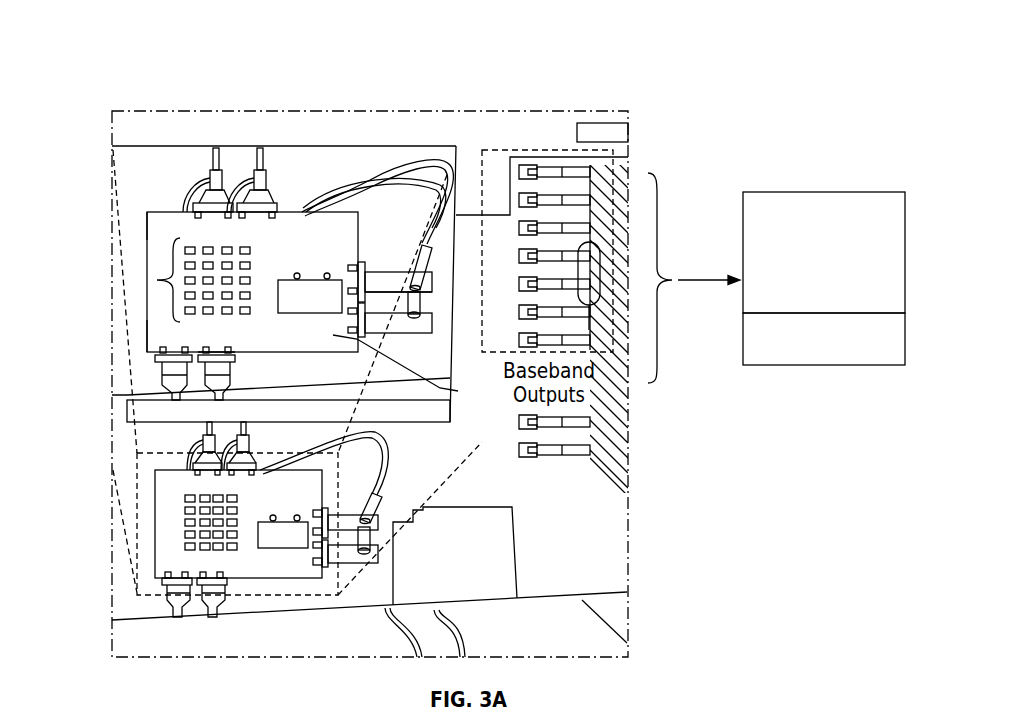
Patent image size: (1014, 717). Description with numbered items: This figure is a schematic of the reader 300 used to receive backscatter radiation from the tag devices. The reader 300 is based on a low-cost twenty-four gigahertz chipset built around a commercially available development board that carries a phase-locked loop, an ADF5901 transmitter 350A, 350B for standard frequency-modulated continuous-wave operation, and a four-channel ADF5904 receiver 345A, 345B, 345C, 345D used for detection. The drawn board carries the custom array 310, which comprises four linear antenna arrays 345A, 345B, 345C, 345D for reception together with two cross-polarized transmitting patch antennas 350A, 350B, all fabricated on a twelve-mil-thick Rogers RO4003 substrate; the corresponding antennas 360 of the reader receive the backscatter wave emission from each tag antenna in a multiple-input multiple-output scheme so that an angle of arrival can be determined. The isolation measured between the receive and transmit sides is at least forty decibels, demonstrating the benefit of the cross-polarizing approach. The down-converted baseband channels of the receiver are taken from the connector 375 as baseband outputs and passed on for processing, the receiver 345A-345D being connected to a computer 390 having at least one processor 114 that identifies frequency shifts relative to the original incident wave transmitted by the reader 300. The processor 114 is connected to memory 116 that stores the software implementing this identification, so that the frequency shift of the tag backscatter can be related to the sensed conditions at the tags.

The reader 300 is at (300, 210).
The custom array 310 is at (147, 272).
The antennas 360 is at (187, 247).
The receiver 345A is at (300, 205).
The receiver 345B is at (147, 228).
The receiver 345C is at (247, 352).
The receiver 345D is at (147, 337).
The transmitter 350A is at (368, 184).
The transmitter 350B is at (440, 388).
The baseband output connectors 375 is at (530, 150).
The computer 390 is at (830, 192).
The processor 114 is at (824, 365).
The memory 116 is at (832, 366).